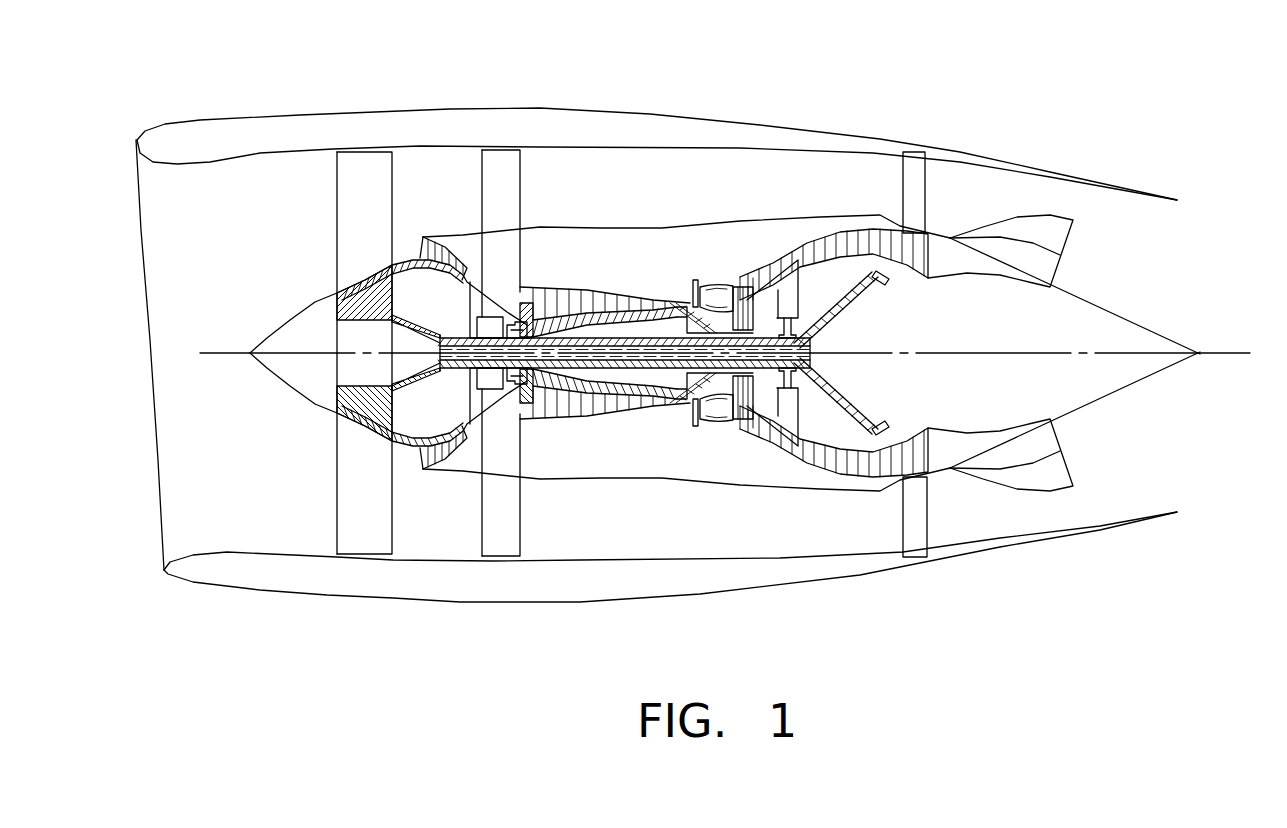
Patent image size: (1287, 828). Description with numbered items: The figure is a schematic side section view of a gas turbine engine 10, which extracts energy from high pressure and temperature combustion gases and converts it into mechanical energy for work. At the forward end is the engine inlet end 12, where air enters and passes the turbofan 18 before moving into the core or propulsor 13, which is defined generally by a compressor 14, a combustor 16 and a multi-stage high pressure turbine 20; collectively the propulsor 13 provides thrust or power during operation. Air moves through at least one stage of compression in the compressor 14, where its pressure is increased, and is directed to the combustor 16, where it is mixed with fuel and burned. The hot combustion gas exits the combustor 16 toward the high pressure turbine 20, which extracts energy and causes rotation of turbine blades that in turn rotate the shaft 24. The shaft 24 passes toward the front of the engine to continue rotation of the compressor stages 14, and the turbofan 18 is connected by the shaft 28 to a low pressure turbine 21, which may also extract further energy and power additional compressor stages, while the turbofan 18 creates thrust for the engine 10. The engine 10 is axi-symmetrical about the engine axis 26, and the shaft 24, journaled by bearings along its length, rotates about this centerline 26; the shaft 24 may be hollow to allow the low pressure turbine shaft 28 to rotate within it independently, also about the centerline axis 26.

The gas turbine engine 10 is at (693, 315).
The engine inlet end 12 is at (135, 183).
The core or propulsor 13 is at (810, 325).
The compressor 14 is at (566, 279).
The combustor 16 is at (720, 273).
The turbofan 18 is at (301, 220).
The multi-stage high pressure turbine 20 is at (771, 254).
The low pressure turbine 21 is at (884, 293).
The shaft 24 is at (690, 403).
The engine axis 26 is at (1258, 353).
The low pressure turbine shaft 28 is at (604, 375).